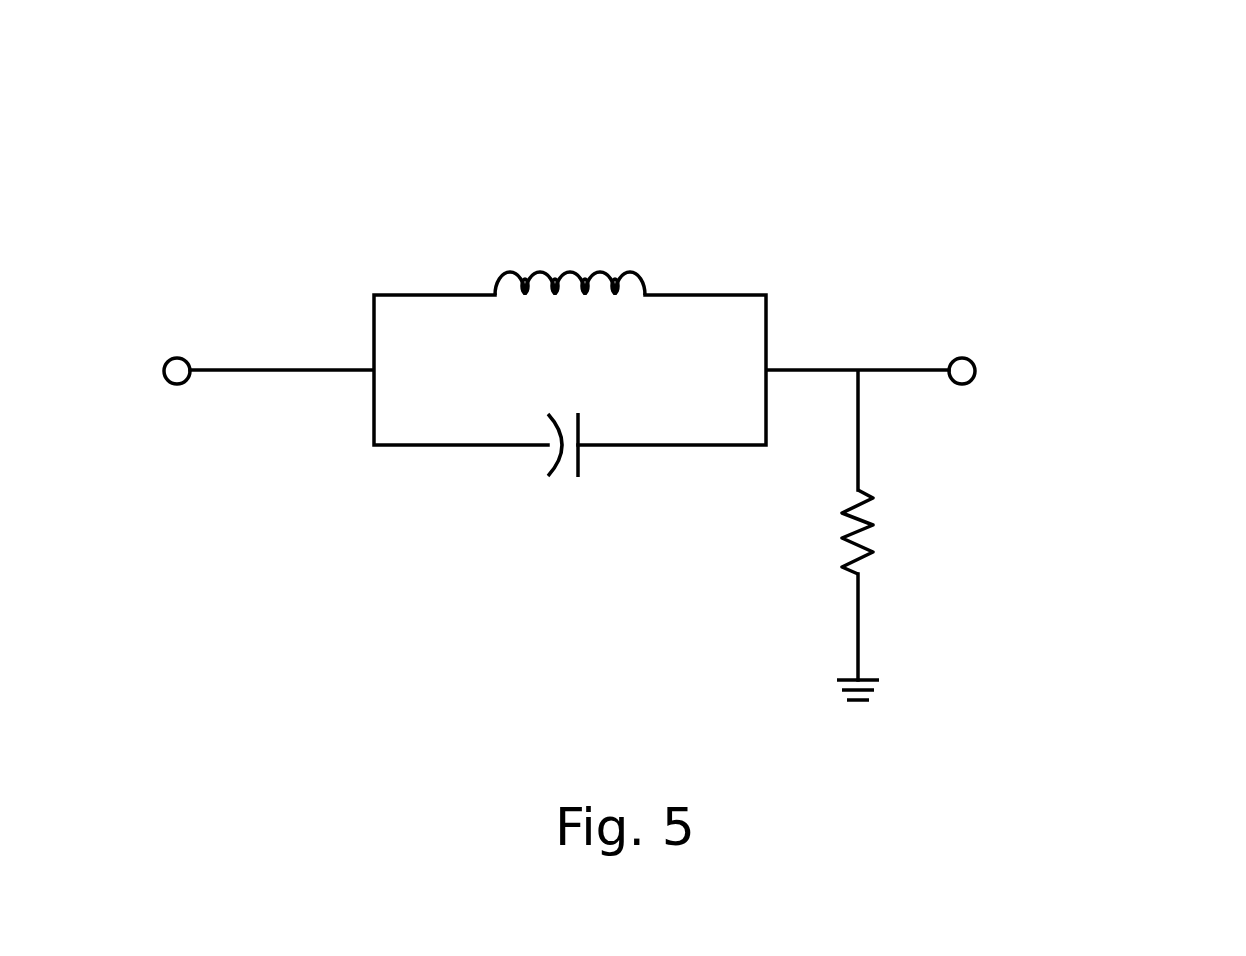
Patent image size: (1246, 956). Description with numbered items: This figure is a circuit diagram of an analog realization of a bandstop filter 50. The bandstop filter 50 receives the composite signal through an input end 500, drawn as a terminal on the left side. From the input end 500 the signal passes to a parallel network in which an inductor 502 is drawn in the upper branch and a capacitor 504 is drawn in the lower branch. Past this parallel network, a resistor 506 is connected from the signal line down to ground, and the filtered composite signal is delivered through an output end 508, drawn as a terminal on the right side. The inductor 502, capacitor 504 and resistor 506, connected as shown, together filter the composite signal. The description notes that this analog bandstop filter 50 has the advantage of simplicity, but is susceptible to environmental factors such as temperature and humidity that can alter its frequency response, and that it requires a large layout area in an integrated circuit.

The bandstop filter 50 is at (1040, 100).
The input end 500 is at (177, 370).
The inductor 502 is at (583, 272).
The capacitor 504 is at (606, 482).
The resistor 506 is at (904, 530).
The output end 508 is at (966, 370).